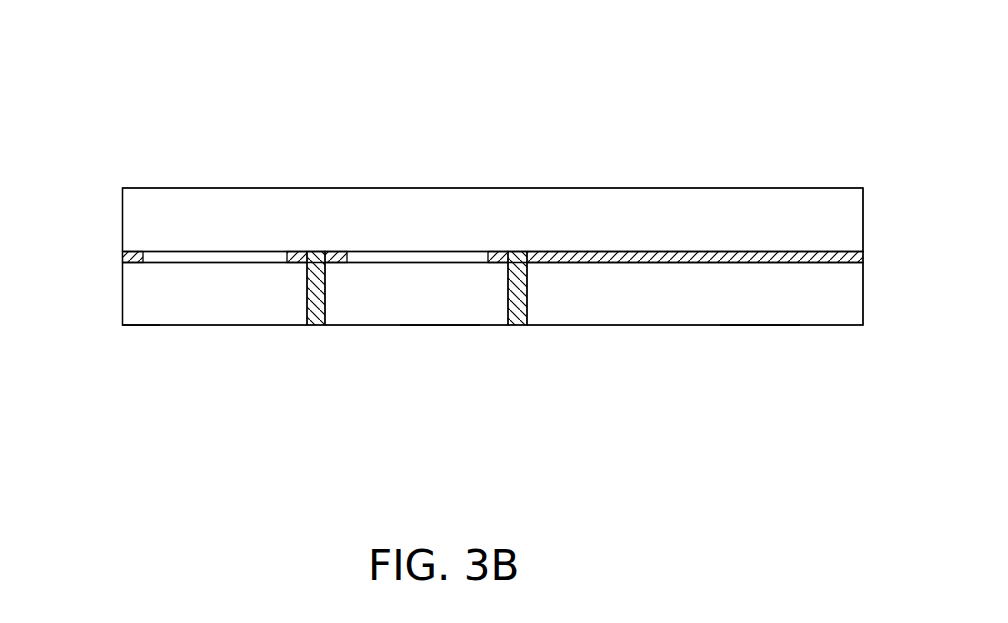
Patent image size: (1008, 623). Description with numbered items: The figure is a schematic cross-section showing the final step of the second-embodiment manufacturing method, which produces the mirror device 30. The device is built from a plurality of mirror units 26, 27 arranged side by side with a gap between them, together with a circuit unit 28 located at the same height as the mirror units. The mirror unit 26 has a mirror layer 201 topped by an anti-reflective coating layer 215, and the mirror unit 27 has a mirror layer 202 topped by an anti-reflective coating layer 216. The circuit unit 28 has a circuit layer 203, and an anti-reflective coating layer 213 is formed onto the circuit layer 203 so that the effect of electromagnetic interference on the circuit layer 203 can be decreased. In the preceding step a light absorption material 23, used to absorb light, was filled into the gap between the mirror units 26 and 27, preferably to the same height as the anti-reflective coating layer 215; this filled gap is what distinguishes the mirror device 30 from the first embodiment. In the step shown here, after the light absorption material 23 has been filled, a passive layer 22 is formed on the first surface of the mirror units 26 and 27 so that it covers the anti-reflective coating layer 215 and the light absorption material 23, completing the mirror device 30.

The mirror device 30 is at (780, 101).
The passive layer 22 is at (720, 208).
The anti-reflective coating layer 213 is at (628, 258).
The anti-reflective coating layer 215 is at (141, 250).
The anti-reflective coating layer 216 is at (347, 252).
The light absorption material 23 is at (318, 252).
The mirror layer 201 is at (150, 305).
The mirror layer 202 is at (356, 305).
The circuit layer 203 is at (645, 305).
The mirror unit 26 is at (106, 348).
The mirror unit 27 is at (442, 335).
The circuit unit 28 is at (763, 335).